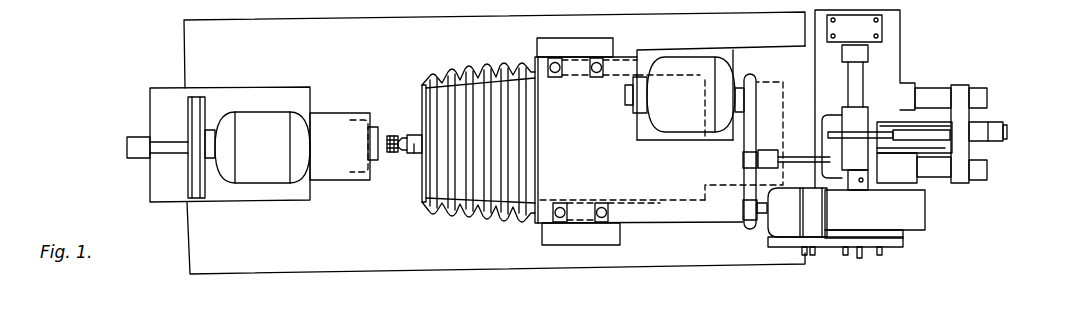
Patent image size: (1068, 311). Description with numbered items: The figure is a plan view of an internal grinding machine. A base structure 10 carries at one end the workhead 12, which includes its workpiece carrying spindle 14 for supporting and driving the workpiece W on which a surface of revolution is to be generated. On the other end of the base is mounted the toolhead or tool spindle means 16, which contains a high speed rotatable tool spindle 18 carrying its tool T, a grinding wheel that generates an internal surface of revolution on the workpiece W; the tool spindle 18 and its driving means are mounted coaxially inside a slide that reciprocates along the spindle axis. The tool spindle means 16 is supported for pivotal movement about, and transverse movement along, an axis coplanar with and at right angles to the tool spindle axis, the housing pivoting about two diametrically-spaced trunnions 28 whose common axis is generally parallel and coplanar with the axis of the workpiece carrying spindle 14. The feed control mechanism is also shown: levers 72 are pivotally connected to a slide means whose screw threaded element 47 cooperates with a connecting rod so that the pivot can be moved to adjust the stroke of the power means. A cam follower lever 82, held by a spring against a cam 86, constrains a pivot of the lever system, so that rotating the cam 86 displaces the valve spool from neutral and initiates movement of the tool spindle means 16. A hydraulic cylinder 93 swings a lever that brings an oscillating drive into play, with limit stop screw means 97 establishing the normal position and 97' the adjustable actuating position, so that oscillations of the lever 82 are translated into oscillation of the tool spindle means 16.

The base structure 10 is at (489, 258).
The workhead 12 is at (287, 196).
The workpiece carrying spindle 14 is at (353, 183).
The workpiece W is at (372, 126).
The tool T is at (394, 135).
The tool spindle 18 is at (411, 156).
The tool spindle means 16 is at (689, 211).
The trunnions 28 is at (583, 66).
The cam 86 is at (838, 118).
The cam follower lever 82 is at (897, 127).
The levers 72 is at (917, 148).
The screw threaded element 47 is at (1001, 122).
The limit stop screw means 97' is at (797, 238).
The limit stop screw means 97 is at (875, 239).
The hydraulic cylinder 93 is at (873, 255).